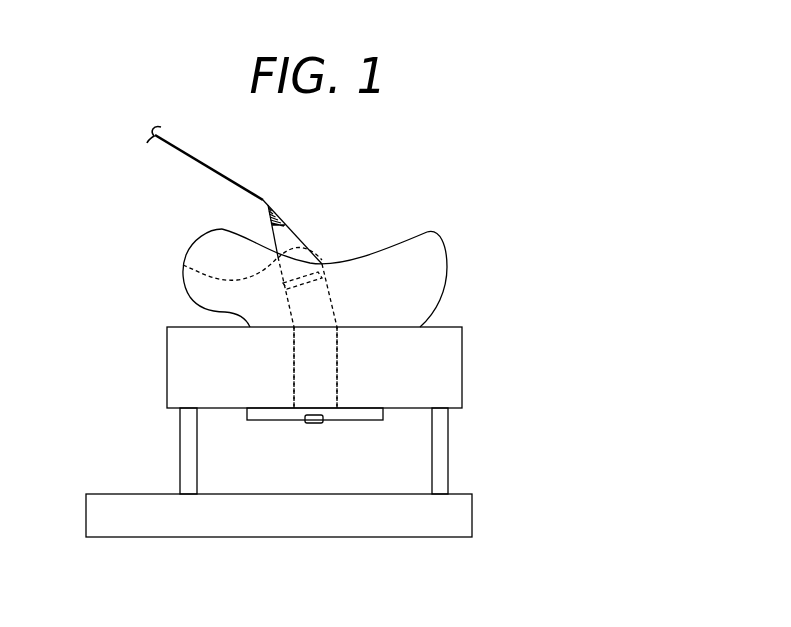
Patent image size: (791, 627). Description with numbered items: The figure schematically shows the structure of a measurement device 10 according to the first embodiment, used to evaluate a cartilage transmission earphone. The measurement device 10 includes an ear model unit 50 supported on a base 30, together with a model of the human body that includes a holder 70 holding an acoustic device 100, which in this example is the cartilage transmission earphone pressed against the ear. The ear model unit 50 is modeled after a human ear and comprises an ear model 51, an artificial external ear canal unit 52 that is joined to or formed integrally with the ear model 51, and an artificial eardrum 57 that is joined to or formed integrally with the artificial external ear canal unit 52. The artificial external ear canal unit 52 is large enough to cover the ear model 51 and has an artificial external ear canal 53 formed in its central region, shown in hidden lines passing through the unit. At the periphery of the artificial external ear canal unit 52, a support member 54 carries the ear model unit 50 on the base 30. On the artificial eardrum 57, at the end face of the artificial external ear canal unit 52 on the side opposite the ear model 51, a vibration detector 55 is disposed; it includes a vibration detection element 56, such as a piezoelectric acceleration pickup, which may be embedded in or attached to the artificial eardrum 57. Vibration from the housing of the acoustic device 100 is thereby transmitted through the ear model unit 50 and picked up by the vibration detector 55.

The measurement device 10 is at (361, 258).
The acoustic device 100 is at (297, 223).
The holder 70 is at (183, 265).
The ear model 51 is at (387, 267).
The ear model unit 50 is at (366, 444).
The artificial external ear canal unit 52 is at (448, 370).
The artificial external ear canal 53 is at (293, 380).
The support member 54 is at (443, 450).
The vibration detector 55 is at (247, 427).
The vibration detection element 56 is at (313, 423).
The artificial eardrum 57 is at (266, 418).
The base 30 is at (88, 515).